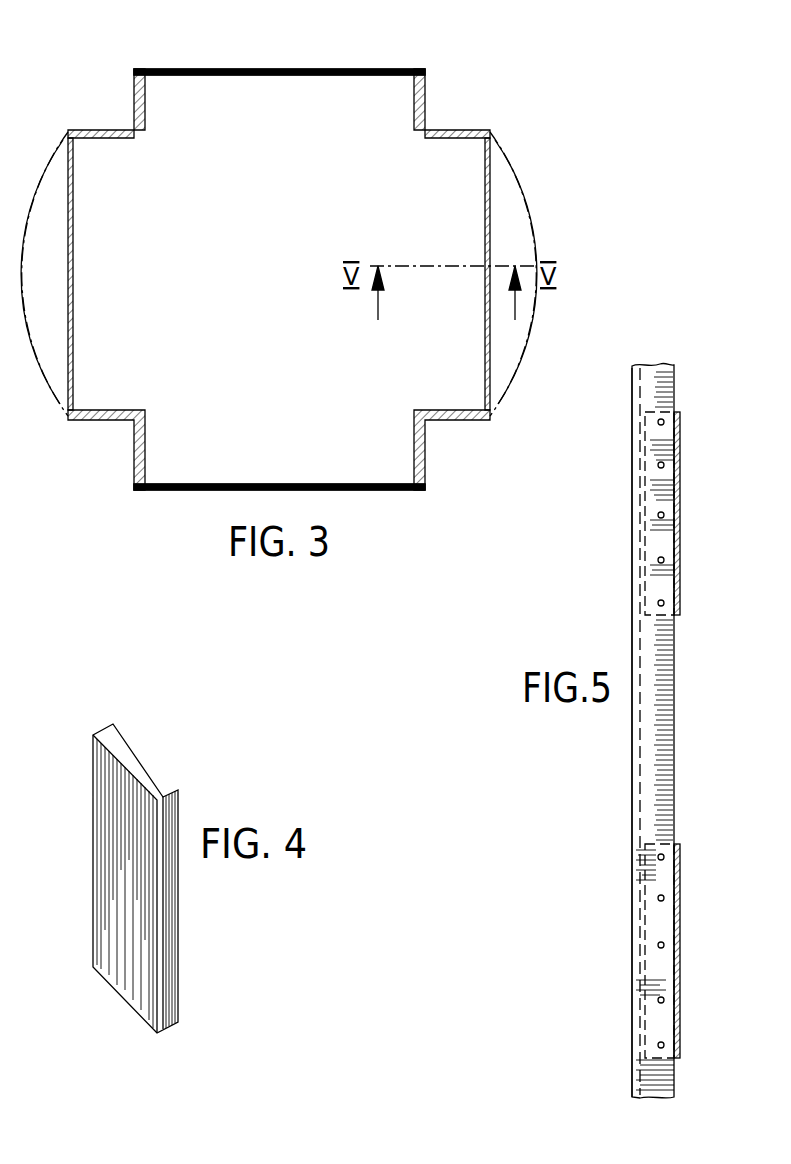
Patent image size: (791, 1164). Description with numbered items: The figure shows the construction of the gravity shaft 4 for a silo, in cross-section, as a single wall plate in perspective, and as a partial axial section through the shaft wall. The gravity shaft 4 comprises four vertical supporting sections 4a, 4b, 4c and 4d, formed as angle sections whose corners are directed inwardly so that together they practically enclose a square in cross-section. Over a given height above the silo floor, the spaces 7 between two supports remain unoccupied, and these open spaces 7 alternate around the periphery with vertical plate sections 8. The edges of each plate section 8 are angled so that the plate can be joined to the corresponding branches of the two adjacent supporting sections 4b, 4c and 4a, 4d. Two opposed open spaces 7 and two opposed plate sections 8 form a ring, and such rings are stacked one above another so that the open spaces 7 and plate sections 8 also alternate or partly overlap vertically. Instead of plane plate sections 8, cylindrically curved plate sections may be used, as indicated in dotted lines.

In FIG. 3, the gravity shaft 4 is at (287, 253).
In FIG. 3, the vertical supporting section 4a is at (140, 108).
In FIG. 3, the vertical supporting section 4b is at (434, 132).
In FIG. 5, the vertical supporting section 4b is at (650, 394).
In FIG. 3, the vertical supporting section 4c is at (420, 440).
In FIG. 3, the vertical supporting section 4d is at (140, 432).
In FIG. 3, the open space 7 is at (238, 62).
In FIG. 5, the open space 7 is at (686, 705).
In FIG. 3, the plate section 8 is at (24, 262).
In FIG. 4, the plate section 8 is at (124, 808).
In FIG. 5, the plate section 8 is at (677, 547).